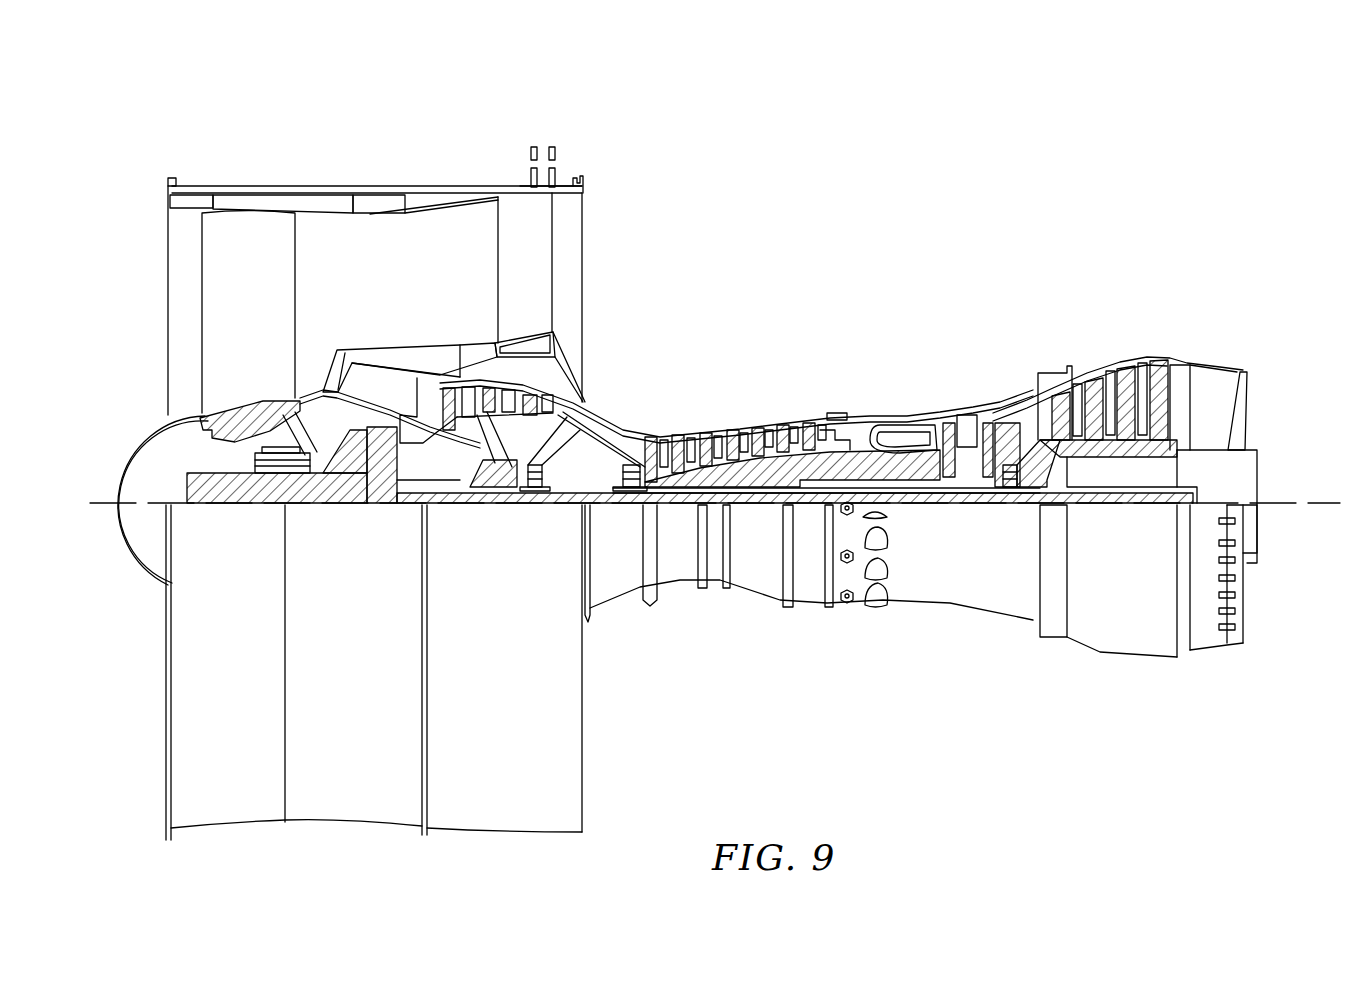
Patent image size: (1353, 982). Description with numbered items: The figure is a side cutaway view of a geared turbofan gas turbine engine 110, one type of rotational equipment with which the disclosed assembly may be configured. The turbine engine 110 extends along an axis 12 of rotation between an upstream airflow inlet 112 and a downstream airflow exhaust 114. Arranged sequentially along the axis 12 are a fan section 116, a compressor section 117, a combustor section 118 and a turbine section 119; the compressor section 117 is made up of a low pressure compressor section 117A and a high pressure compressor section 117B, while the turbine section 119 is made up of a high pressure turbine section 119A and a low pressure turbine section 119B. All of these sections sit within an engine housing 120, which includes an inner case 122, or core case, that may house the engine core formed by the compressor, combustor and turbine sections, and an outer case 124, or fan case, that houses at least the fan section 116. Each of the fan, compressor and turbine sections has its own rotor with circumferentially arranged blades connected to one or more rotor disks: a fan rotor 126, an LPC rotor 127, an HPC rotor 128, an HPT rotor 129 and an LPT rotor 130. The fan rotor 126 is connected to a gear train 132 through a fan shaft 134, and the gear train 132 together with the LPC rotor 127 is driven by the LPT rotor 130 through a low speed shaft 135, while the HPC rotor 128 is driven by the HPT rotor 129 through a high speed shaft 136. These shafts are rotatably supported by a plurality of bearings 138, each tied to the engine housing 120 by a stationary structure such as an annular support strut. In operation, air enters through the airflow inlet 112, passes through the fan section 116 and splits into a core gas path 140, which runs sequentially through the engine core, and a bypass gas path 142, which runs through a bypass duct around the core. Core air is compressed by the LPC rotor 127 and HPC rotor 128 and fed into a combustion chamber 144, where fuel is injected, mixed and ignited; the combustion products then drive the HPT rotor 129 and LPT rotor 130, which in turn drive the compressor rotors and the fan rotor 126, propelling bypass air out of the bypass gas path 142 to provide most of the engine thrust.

The geared turbofan gas turbine engine 110 is at (321, 143).
The axis 12 is at (1301, 501).
The upstream airflow inlet 112 is at (168, 261).
The downstream airflow exhaust 114 is at (1248, 400).
The fan section 116 is at (172, 162).
The compressor section 117 is at (810, 100).
The low pressure compressor section 117A is at (585, 143).
The high pressure compressor section 117B is at (808, 339).
The combustor section 118 is at (935, 339).
The turbine section 119 is at (943, 269).
The high pressure turbine section 119A is at (1020, 339).
The low pressure turbine section 119B is at (1205, 339).
The engine housing 120 is at (610, 628).
The inner case 122 is at (808, 607).
The outer case 124 is at (537, 836).
The fan rotor 126 is at (188, 422).
The LPC rotor 127 is at (493, 447).
The HPC rotor 128 is at (753, 468).
The HPT rotor 129 is at (963, 500).
The LPT rotor 130 is at (1117, 447).
The gear train 132 is at (376, 512).
The fan shaft 134 is at (237, 518).
The low speed shaft 135 is at (1120, 505).
The high speed shaft 136 is at (898, 485).
The bearings 138 is at (256, 475).
The core gas path 140 is at (610, 427).
The bypass gas path 142 is at (432, 279).
The combustion chamber 144 is at (889, 438).